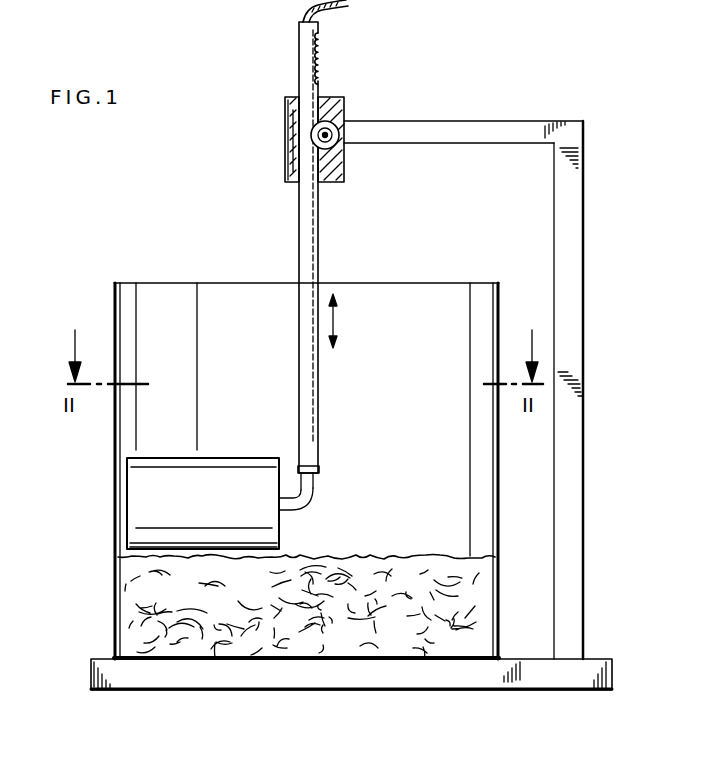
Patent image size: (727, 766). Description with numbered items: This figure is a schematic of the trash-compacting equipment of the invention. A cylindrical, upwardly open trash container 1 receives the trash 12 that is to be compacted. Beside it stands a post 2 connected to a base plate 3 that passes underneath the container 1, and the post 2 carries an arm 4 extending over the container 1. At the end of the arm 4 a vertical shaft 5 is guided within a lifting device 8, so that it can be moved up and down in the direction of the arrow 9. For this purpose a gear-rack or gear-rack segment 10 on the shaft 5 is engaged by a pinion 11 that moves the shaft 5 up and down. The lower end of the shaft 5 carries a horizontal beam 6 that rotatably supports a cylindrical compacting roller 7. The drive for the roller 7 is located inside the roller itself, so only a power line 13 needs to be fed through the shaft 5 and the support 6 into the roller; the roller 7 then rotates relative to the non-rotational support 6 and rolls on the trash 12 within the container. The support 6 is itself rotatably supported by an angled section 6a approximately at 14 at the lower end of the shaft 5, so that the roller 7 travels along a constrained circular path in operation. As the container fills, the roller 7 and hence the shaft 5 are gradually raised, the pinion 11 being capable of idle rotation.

The trash container 1 is at (113, 541).
The post 2 is at (584, 336).
The base plate 3 is at (462, 677).
The arm 4 is at (472, 130).
The vertical shaft 5 is at (300, 248).
The horizontal beam 6 is at (290, 506).
The angled section 6a is at (314, 496).
The compacting roller 7 is at (226, 462).
The lifting device 8 is at (282, 143).
The arrow 9 is at (336, 322).
The gear-rack segment 10 is at (322, 62).
The pinion 11 is at (336, 124).
The trash 12 is at (418, 557).
The power line 13 is at (332, 12).
The rotatable support location 14 is at (312, 472).